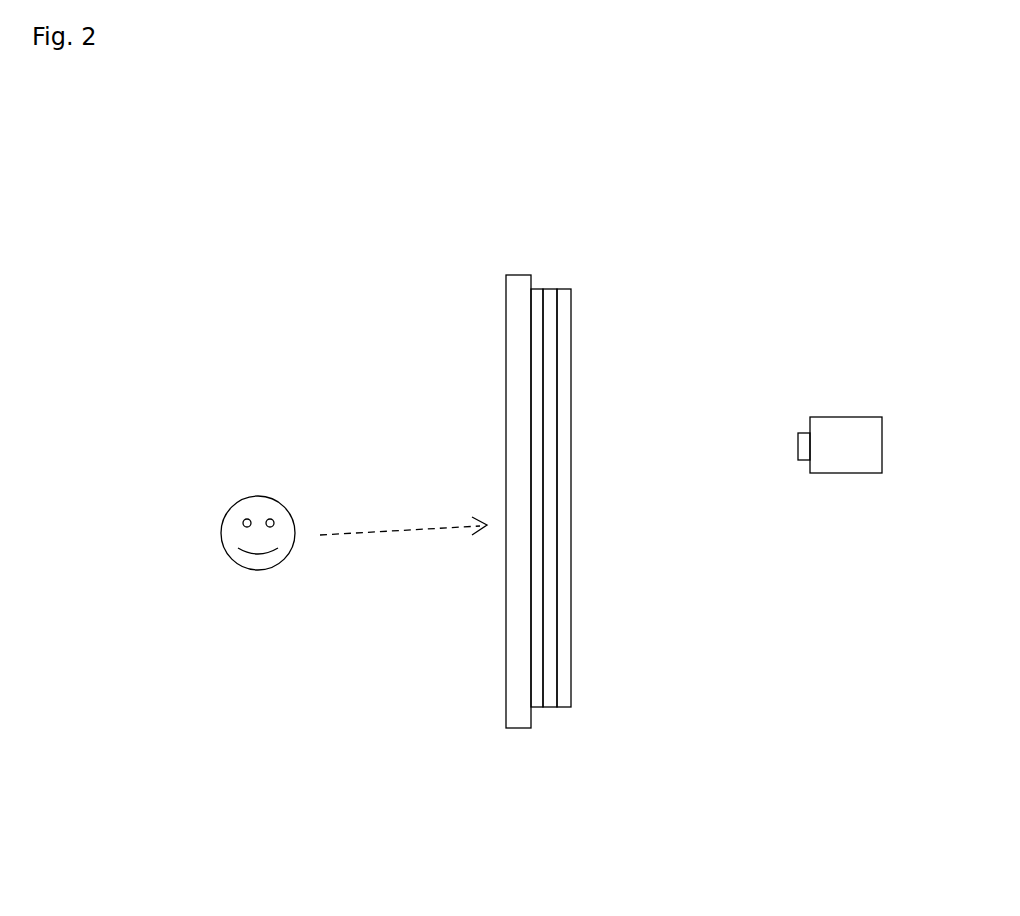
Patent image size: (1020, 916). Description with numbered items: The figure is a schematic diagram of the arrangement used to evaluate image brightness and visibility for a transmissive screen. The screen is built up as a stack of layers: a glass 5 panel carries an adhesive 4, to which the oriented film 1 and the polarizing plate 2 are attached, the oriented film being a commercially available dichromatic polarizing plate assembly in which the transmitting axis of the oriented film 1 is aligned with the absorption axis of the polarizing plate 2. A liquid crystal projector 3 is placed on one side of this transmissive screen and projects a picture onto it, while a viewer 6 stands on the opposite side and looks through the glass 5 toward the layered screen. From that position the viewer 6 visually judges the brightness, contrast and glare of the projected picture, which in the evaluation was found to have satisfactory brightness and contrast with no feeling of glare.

The oriented film 1 is at (565, 707).
The polarizing plate 2 is at (552, 298).
The liquid crystal projector 3 is at (836, 457).
The adhesive 4 is at (538, 707).
The glass 5 is at (515, 718).
The viewer 6 is at (257, 563).